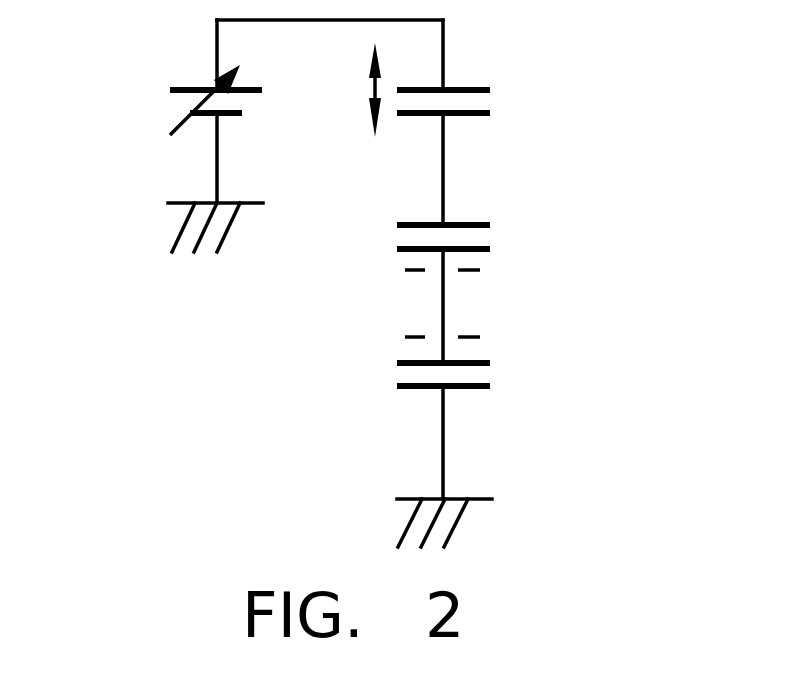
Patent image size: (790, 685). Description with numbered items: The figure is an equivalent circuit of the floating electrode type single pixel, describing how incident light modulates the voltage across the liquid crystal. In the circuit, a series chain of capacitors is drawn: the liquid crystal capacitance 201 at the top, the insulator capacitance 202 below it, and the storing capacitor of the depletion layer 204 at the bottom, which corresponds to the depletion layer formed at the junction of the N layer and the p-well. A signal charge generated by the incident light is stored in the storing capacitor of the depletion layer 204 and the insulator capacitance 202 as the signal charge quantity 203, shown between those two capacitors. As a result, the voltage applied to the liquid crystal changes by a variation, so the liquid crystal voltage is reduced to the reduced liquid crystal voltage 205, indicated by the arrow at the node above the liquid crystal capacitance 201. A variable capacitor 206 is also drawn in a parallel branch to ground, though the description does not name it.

The liquid crystal capacitance 201 is at (570, 110).
The insulator capacitance 202 is at (548, 248).
The signal charge quantity 203 is at (552, 308).
The storing capacitor of the depletion layer 204 is at (575, 378).
The reduced liquid crystal voltage 205 is at (373, 92).
The variable capacitor 206 is at (197, 100).